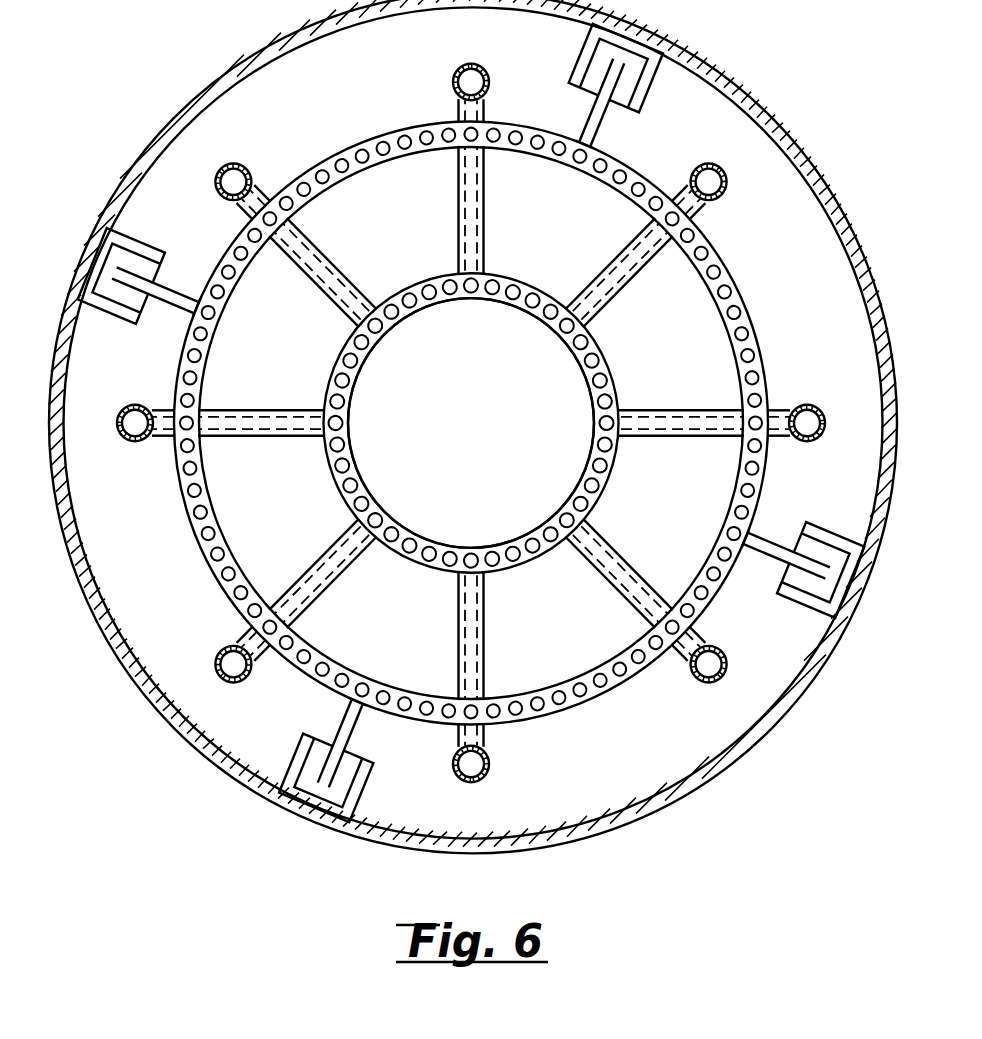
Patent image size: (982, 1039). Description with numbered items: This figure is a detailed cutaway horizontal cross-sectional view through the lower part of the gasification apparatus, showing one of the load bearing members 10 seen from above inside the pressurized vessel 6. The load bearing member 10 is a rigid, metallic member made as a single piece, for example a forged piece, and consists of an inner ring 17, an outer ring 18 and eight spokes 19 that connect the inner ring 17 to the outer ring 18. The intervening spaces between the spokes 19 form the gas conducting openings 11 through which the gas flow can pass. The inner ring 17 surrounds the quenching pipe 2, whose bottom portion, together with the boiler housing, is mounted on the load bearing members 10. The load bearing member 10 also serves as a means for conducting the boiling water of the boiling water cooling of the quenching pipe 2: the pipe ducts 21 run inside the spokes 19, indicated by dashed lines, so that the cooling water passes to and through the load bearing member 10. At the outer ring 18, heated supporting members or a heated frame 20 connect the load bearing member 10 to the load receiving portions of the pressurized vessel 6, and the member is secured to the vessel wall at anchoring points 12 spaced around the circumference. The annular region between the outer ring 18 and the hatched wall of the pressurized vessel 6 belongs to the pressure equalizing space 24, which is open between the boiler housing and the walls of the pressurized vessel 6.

The quenching pipe 2 is at (492, 392).
The pressurized vessel 6 is at (757, 99).
The load bearing members 10 is at (471, 415).
The gas conducting openings 11 is at (296, 352).
The anchoring points 12 is at (653, 72).
The inner ring 17 is at (355, 373).
The outer ring 18 is at (368, 147).
The spokes 19 is at (600, 238).
The heated supporting members 20 is at (587, 125).
The pipe ducts 21 is at (466, 230).
The pressure equalizing space 24 is at (802, 188).